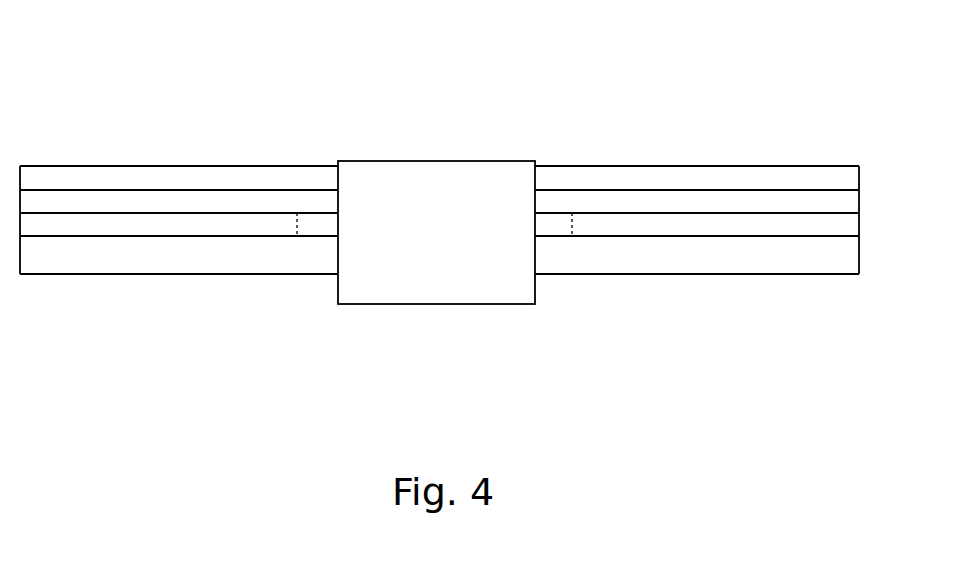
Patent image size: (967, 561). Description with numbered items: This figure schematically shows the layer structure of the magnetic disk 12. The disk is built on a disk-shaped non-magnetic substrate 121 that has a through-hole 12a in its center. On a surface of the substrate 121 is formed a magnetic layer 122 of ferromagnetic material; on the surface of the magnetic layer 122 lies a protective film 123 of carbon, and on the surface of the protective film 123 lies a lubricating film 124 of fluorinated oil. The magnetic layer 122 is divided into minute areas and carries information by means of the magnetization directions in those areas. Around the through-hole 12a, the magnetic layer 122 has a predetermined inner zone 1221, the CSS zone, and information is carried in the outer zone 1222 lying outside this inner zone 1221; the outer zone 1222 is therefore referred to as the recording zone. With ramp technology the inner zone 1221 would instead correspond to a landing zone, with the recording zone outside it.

The magnetic disk 12 is at (710, 116).
The through-hole 12a is at (535, 202).
The non-magnetic substrate 121 is at (842, 257).
The magnetic layer 122 is at (840, 228).
The protective film 123 is at (838, 203).
The lubricating film 124 is at (838, 180).
The inner zone 1221 is at (555, 226).
The outer zone 1222 is at (697, 227).